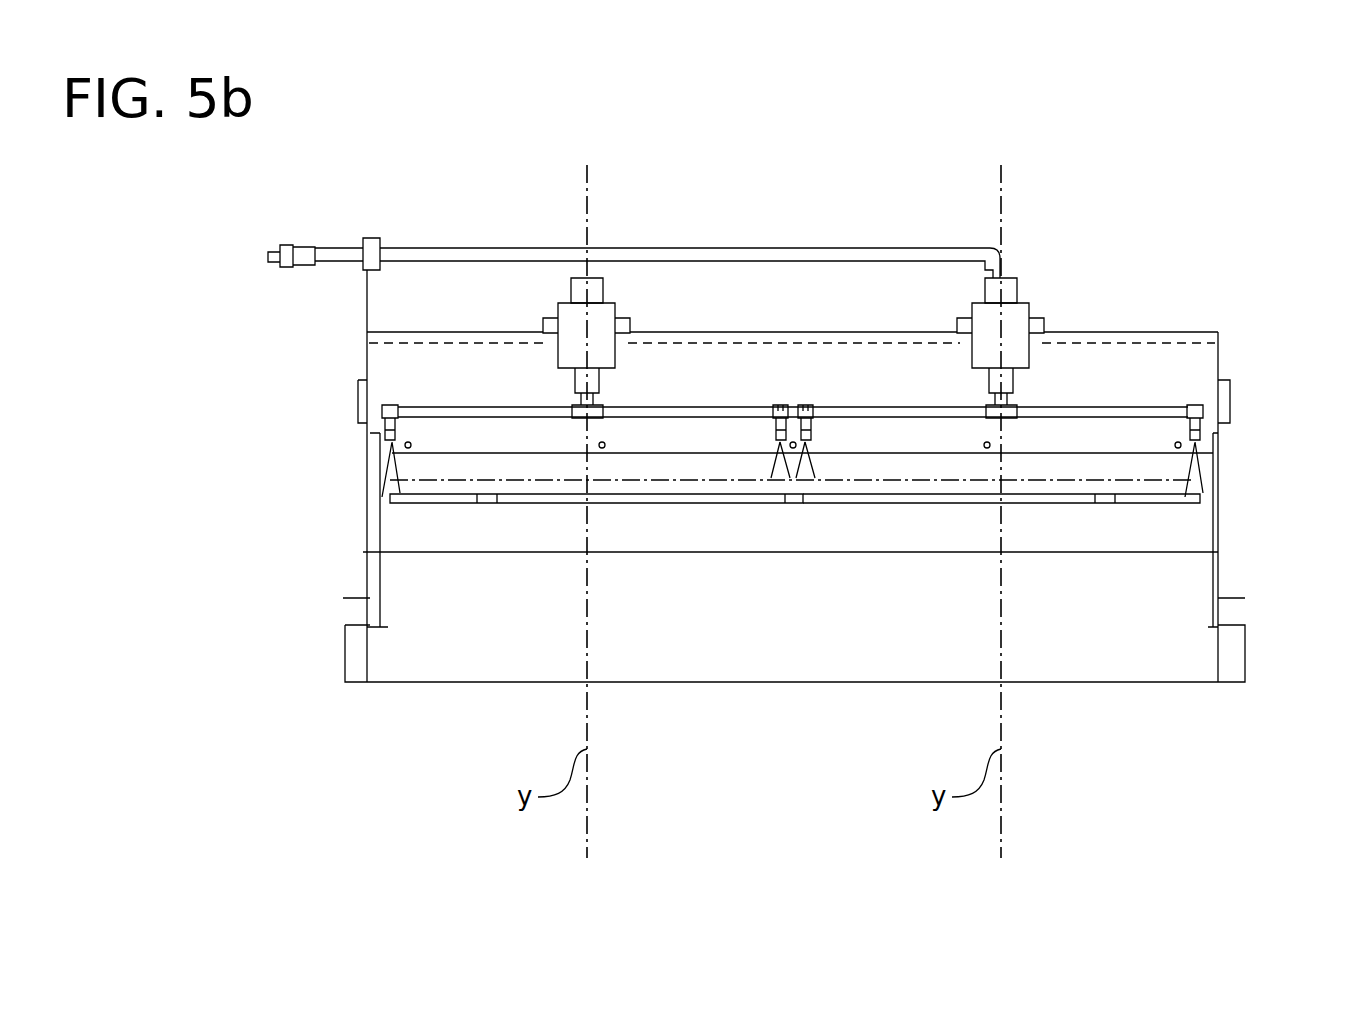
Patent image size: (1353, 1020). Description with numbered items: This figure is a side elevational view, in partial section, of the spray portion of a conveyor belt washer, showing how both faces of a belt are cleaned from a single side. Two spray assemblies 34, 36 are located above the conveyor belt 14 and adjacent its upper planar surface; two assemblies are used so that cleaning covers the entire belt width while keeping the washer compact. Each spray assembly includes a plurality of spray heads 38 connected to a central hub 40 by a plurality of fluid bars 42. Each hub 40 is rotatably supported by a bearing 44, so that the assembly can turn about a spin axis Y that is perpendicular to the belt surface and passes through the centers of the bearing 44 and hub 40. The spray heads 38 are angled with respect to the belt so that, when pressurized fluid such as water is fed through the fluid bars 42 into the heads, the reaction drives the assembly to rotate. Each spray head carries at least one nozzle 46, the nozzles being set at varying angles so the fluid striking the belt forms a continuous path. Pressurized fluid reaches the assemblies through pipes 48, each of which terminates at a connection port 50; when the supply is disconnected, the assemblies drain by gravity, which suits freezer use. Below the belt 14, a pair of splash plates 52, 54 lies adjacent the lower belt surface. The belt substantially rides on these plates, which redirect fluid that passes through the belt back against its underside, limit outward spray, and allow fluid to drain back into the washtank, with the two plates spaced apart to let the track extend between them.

The conveyor belt 14 is at (435, 478).
The spray assembly 34 is at (620, 392).
The spray assembly 36 is at (1022, 397).
The spray head 38 is at (392, 405).
The hub 40 is at (580, 420).
The fluid bar 42 is at (497, 405).
The bearing 44 is at (558, 348).
The nozzle 46 is at (385, 437).
The pipe 48 is at (498, 258).
The connection port 50 is at (613, 278).
The splash plate 52 is at (440, 498).
The splash plate 54 is at (850, 498).